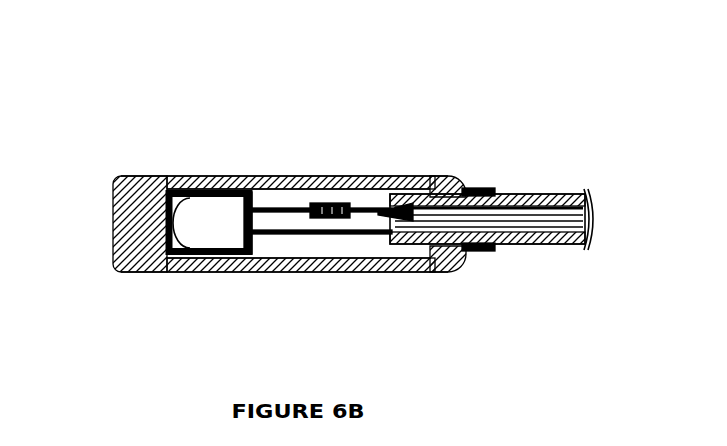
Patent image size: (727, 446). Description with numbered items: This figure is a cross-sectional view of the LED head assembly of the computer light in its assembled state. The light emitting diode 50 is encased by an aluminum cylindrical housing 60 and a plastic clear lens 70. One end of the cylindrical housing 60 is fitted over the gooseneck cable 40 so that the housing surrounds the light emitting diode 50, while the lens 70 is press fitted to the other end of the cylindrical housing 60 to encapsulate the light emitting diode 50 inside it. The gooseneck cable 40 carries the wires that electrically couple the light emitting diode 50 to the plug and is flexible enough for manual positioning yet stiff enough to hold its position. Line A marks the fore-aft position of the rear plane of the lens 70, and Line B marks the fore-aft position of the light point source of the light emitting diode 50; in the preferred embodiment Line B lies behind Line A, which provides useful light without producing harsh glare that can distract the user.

The lens 70 is at (118, 270).
The light emitting diode 50 is at (257, 236).
The cylindrical housing 60 is at (463, 260).
The gooseneck cable 40 is at (578, 245).
The Line A is at (166, 176).
The Line B is at (203, 176).